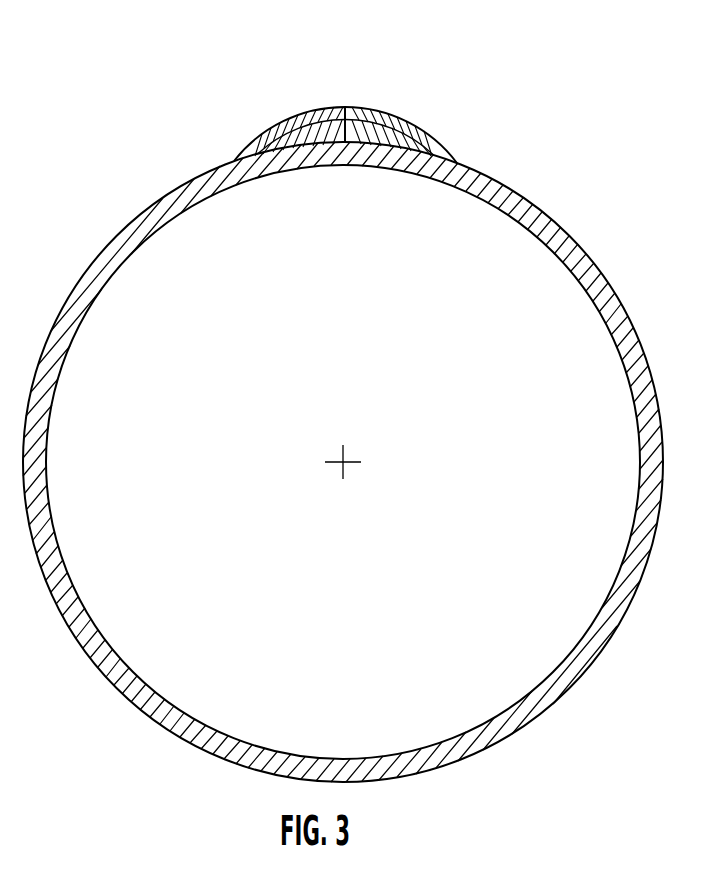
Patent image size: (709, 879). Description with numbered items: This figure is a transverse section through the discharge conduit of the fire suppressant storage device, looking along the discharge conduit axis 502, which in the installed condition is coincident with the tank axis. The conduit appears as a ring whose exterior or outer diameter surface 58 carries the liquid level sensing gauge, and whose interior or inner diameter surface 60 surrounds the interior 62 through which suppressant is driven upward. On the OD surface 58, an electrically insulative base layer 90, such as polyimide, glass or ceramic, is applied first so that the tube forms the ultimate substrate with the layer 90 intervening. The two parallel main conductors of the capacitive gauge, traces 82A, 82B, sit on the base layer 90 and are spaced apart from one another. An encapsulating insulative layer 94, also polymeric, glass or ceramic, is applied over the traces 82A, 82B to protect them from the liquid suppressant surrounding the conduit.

The outer diameter surface 58 is at (600, 266).
The inner diameter surface 60 is at (592, 297).
The interior 62 is at (503, 456).
The electrically insulative base layer 90 is at (353, 148).
The trace 82A is at (303, 112).
The trace 82B is at (390, 110).
The encapsulating insulative layer 94 is at (340, 110).
The discharge conduit axis 502 is at (345, 460).